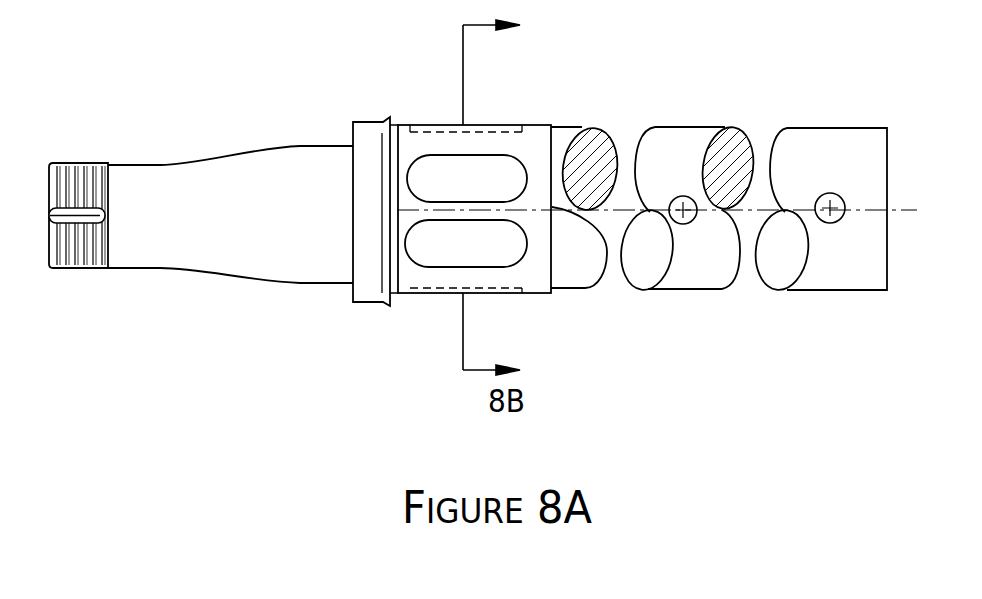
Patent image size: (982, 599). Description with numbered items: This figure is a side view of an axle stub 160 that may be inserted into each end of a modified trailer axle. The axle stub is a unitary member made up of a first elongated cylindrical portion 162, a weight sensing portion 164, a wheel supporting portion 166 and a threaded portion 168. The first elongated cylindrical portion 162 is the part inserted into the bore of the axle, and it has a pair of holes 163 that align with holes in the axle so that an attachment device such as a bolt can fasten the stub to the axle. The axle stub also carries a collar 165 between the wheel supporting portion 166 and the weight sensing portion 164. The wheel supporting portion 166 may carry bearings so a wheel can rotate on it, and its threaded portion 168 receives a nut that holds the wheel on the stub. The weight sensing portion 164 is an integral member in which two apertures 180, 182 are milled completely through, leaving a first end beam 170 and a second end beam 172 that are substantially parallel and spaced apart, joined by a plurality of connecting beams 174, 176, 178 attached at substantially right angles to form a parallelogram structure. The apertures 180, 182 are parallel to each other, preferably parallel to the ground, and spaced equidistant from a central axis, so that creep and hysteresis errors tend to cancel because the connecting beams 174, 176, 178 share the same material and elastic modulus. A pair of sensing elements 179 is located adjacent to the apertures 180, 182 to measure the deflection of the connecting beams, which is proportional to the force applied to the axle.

The axle stub 160 is at (276, 65).
The first elongated cylindrical portion 162 is at (830, 285).
The holes 163 is at (683, 195).
The weight sensing portion 164 is at (398, 300).
The collar 165 is at (366, 303).
The wheel supporting portion 166 is at (250, 281).
The threaded portion 168 is at (75, 270).
The first end beam 170 is at (397, 124).
The second end beam 172 is at (555, 207).
The connecting beam 174 is at (433, 138).
The connecting beam 176 is at (505, 291).
The connecting beam 178 is at (548, 140).
The sensing elements 179 is at (497, 125).
The aperture 180 is at (492, 196).
The aperture 182 is at (488, 261).